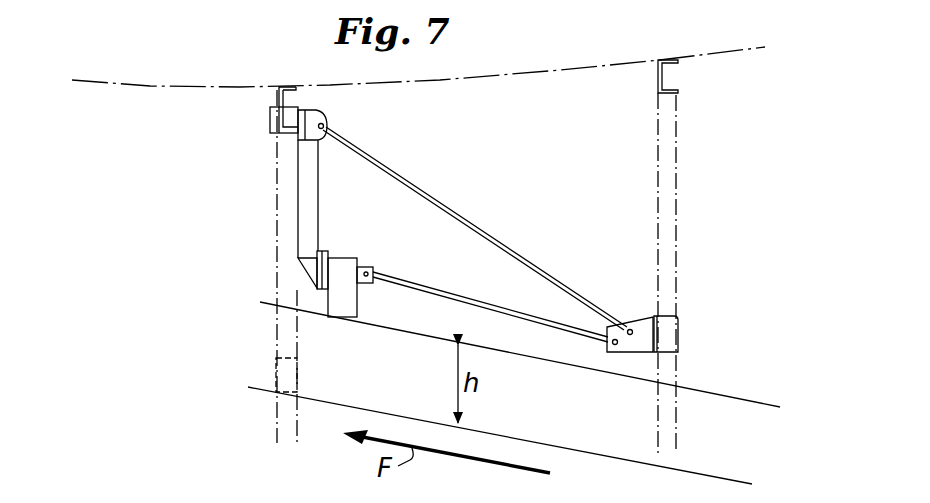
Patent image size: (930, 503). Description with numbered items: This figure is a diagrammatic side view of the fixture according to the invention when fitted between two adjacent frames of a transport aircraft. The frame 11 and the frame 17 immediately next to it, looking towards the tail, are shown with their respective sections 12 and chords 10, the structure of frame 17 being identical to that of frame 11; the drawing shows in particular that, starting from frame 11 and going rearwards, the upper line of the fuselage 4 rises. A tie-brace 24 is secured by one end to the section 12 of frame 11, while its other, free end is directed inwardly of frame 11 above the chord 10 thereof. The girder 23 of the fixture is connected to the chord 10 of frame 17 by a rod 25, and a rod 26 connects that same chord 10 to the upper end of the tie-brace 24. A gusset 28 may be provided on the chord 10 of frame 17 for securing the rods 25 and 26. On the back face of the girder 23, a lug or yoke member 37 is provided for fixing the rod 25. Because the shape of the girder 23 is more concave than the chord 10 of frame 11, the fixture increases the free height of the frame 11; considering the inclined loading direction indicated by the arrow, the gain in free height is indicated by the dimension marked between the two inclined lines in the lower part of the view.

The fuselage 4 is at (521, 70).
The chord 10 is at (670, 338).
The frame 11 is at (273, 262).
The section 12 is at (277, 97).
The frame 17 is at (681, 241).
The girder 23 is at (342, 273).
The tie-brace 24 is at (307, 191).
The rod 25 is at (437, 288).
The rod 26 is at (465, 220).
The gusset 28 is at (641, 318).
The yoke member 37 is at (373, 268).